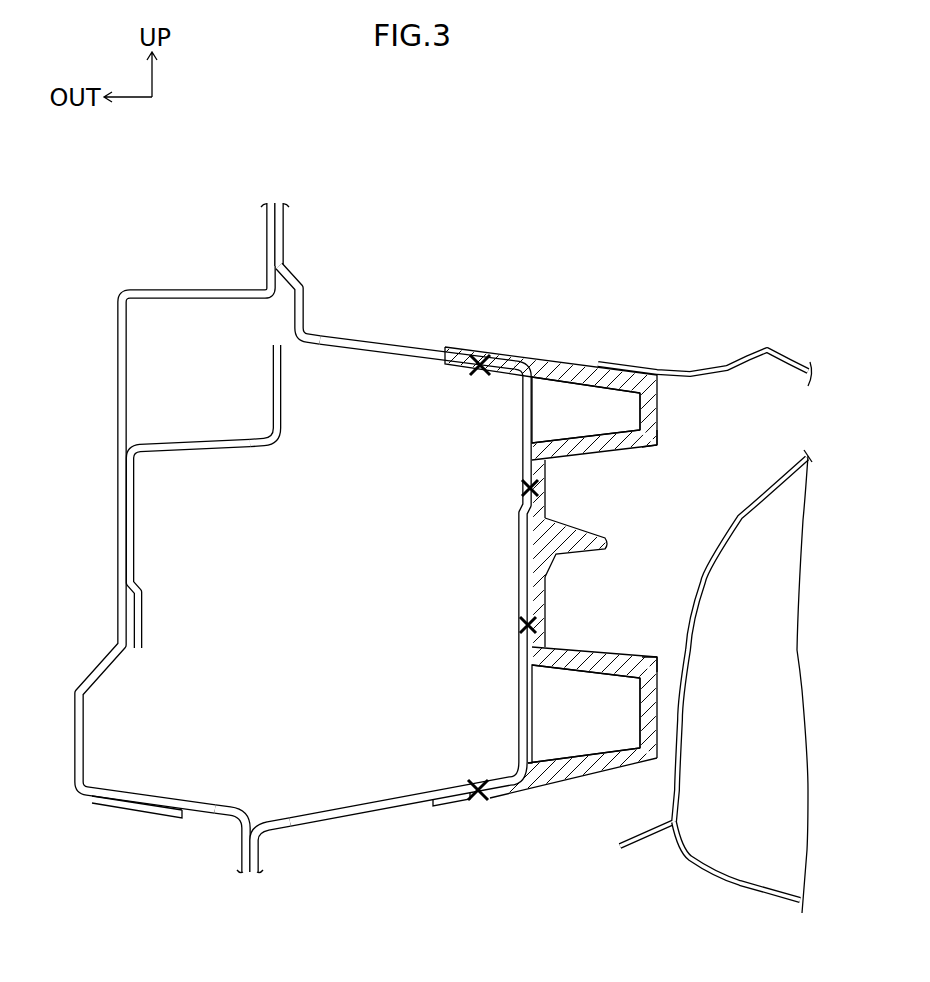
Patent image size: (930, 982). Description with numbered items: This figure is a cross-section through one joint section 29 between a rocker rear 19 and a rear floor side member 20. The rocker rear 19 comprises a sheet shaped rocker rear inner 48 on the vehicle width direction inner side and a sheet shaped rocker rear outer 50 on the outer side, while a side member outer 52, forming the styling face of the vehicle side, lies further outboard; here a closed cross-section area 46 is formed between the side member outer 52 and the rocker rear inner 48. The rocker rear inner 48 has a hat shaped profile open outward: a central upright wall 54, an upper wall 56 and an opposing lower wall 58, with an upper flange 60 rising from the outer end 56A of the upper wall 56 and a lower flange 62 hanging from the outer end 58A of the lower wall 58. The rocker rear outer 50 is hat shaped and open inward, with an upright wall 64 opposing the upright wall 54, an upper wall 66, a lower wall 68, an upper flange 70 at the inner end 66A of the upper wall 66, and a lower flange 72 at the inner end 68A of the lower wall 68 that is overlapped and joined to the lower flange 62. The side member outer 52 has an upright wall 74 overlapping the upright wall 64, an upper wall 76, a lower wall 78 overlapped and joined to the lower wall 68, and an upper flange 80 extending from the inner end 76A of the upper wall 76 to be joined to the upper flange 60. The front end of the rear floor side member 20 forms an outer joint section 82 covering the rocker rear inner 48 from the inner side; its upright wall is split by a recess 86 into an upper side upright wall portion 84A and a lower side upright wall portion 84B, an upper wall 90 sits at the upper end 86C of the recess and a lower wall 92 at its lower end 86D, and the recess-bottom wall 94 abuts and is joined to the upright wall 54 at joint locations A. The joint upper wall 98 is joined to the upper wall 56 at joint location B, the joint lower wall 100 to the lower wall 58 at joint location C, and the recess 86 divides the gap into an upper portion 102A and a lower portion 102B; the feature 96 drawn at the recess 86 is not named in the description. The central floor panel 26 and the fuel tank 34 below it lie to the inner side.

The rocker rear 19 is at (407, 317).
The rear floor side member 20 is at (637, 331).
The central floor panel 26 is at (748, 358).
The joint section 29 is at (553, 321).
The fuel tank 34 is at (753, 890).
The closed cross-section area 46 is at (314, 572).
The rocker rear inner 48 is at (417, 349).
The rocker rear outer 50 is at (222, 495).
The side member outer 52 is at (159, 548).
The upright wall 54 is at (522, 603).
The upper wall 56 is at (423, 360).
The vehicle width direction outer end 56A is at (303, 338).
The lower wall 58 is at (395, 800).
The vehicle width direction outer end 58A is at (255, 825).
The upper flange 60 is at (303, 292).
The lower flange 62 is at (255, 857).
The upright wall 64 is at (135, 560).
The upper wall 66 is at (217, 447).
The vehicle width direction inner end 66A is at (268, 440).
The lower wall 68 is at (147, 793).
The vehicle width direction inner end 68A is at (240, 807).
The upper flange 70 is at (273, 380).
The lower flange 72 is at (238, 855).
The upright wall 74 is at (118, 537).
The upper wall 76 is at (176, 292).
The vehicle width direction inner end 76A is at (268, 302).
The lower wall 78 is at (128, 803).
The upper flange 80 is at (268, 240).
The outer joint section 82 is at (589, 370).
The upper side upright wall portion 84A is at (660, 407).
The lower side upright wall portion 84B is at (657, 718).
The recess 86 is at (606, 553).
The vehicle vertical direction upper end 86C is at (657, 447).
The vehicle vertical direction lower end 86D is at (657, 658).
The upper wall 90 is at (613, 450).
The lower wall 92 is at (627, 652).
The recess-bottom wall 94 is at (540, 580).
The protruding tab 96 is at (597, 533).
The joint upper wall 98 is at (515, 352).
The joint lower wall 100 is at (568, 777).
The upper portion 102A is at (566, 414).
The lower portion 102B is at (548, 692).
The joint location A is at (522, 490).
The joint location B is at (481, 352).
The joint location C is at (477, 800).